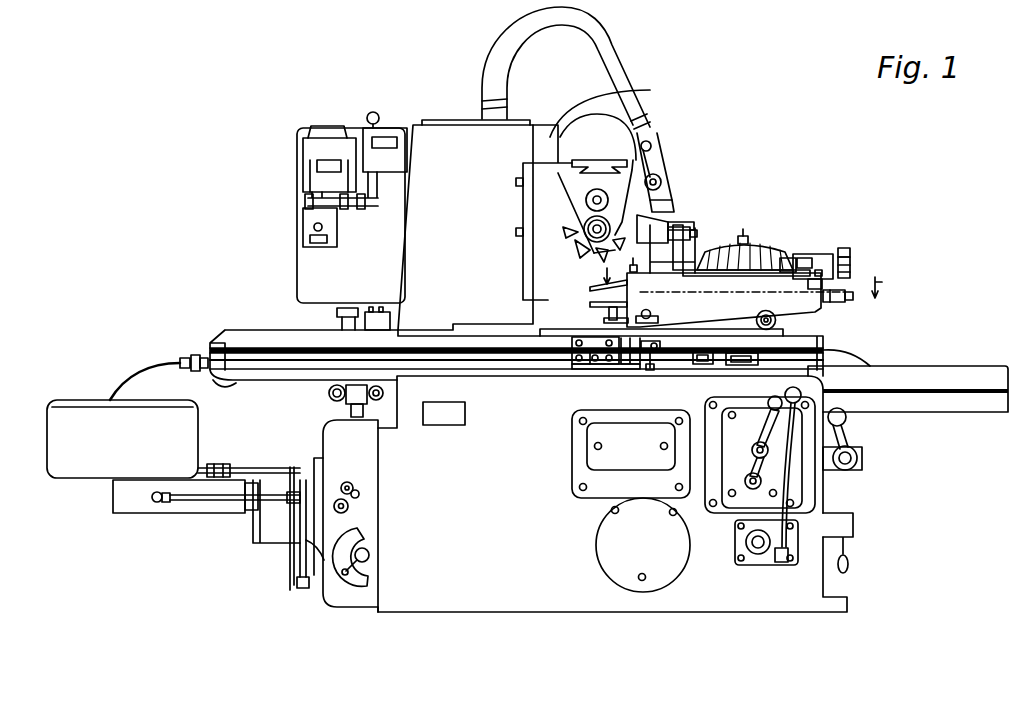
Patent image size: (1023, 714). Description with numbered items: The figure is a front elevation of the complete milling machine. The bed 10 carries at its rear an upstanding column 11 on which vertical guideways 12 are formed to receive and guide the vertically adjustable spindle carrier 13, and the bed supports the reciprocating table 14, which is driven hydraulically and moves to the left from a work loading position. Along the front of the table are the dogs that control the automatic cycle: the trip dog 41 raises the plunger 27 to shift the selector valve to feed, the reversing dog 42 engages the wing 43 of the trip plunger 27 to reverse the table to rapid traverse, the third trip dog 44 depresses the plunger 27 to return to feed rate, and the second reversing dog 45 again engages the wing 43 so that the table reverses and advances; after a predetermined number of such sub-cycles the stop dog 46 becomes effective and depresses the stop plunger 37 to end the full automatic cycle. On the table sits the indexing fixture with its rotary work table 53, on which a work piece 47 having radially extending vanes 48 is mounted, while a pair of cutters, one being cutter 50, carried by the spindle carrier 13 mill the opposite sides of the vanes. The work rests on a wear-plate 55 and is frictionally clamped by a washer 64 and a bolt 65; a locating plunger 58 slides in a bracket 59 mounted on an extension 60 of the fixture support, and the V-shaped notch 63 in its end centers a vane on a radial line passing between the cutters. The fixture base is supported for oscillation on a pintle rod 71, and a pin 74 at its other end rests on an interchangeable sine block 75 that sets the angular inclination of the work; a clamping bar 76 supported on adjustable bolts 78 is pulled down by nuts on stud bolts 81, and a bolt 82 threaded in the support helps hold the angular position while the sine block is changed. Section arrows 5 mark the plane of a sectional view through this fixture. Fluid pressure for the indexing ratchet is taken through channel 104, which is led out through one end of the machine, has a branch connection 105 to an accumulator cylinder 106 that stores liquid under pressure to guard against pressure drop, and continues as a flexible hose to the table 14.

The section line 5- 5 is at (747, 279).
The bed 10 is at (422, 592).
The column 11 is at (452, 143).
The vertical guideways 12 is at (650, 90).
The spindle carrier 13 is at (677, 223).
The reciprocating table 14 is at (800, 350).
The trip plunger 27 is at (622, 367).
The stop plunger 37 is at (583, 372).
The trip dog 41 is at (707, 365).
The reversing dog 42 is at (735, 365).
The wing 43 is at (643, 368).
The third trip dog 44 is at (650, 354).
The second reversing dog 45 is at (610, 368).
The stop dog 46 is at (583, 367).
The work piece 47 is at (786, 257).
The radially extending vanes 48 is at (698, 230).
The cutter 50 is at (590, 251).
The rotary work table 53 is at (660, 262).
The wear-plate 55 is at (792, 262).
The plunger 58 is at (848, 260).
The bracket 59 is at (846, 258).
The extension 60 is at (847, 292).
The V-shaped notch 63 is at (810, 253).
The washer 64 is at (700, 256).
The bolt 65 is at (744, 237).
The pintle rod 71 is at (770, 320).
The pin 74 is at (650, 319).
The sine block 75 is at (648, 328).
The clamping bar 76 is at (599, 289).
The adjustable bolts 78 is at (590, 305).
The stud bolts 81 is at (645, 311).
The bolt 82 is at (633, 260).
The channel 104 is at (118, 378).
The branch connection 105 is at (273, 512).
The accumulator cylinder 106 is at (183, 505).